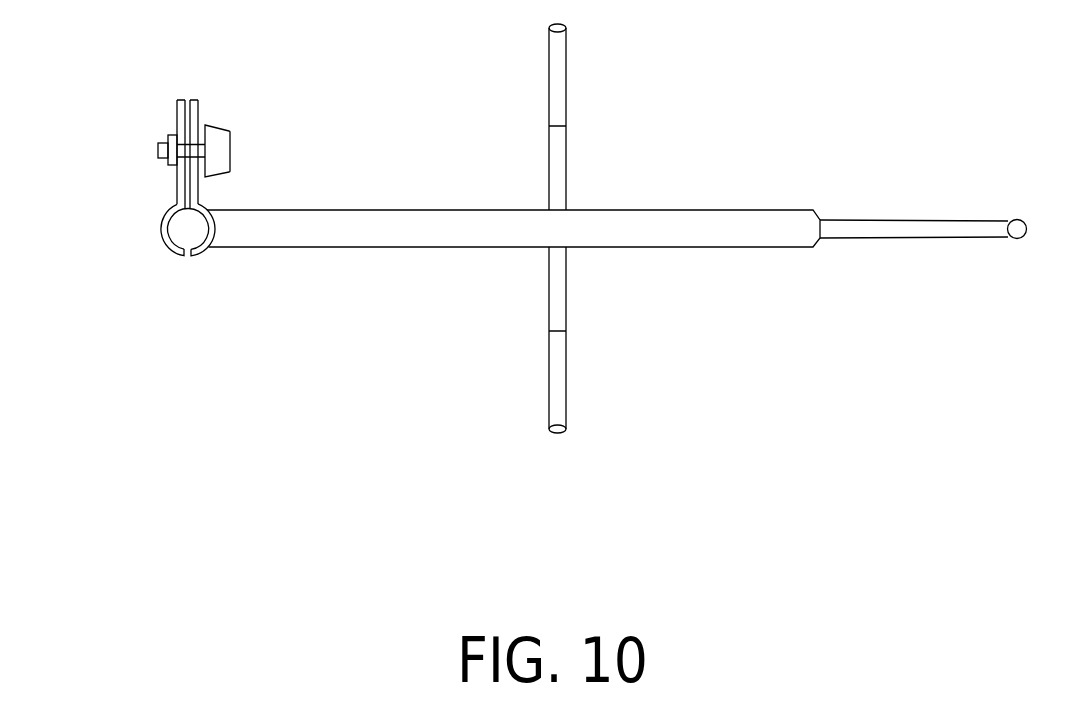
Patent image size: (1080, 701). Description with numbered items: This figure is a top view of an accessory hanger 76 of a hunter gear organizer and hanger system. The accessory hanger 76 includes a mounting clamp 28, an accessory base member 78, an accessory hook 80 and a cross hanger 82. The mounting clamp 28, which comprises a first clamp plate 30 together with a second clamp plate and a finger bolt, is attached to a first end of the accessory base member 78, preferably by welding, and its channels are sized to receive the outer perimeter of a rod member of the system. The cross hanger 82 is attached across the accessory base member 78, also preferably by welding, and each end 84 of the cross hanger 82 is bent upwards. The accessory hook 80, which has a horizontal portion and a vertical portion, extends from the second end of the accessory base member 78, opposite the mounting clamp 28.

The mounting clamp 28 is at (163, 183).
The first clamp plate 30 is at (198, 110).
The accessory hanger 76 is at (258, 302).
The accessory base member 78 is at (353, 233).
The accessory hook 80 is at (942, 218).
The cross hanger 82 is at (565, 287).
The end of the cross hanger 84 is at (558, 67).